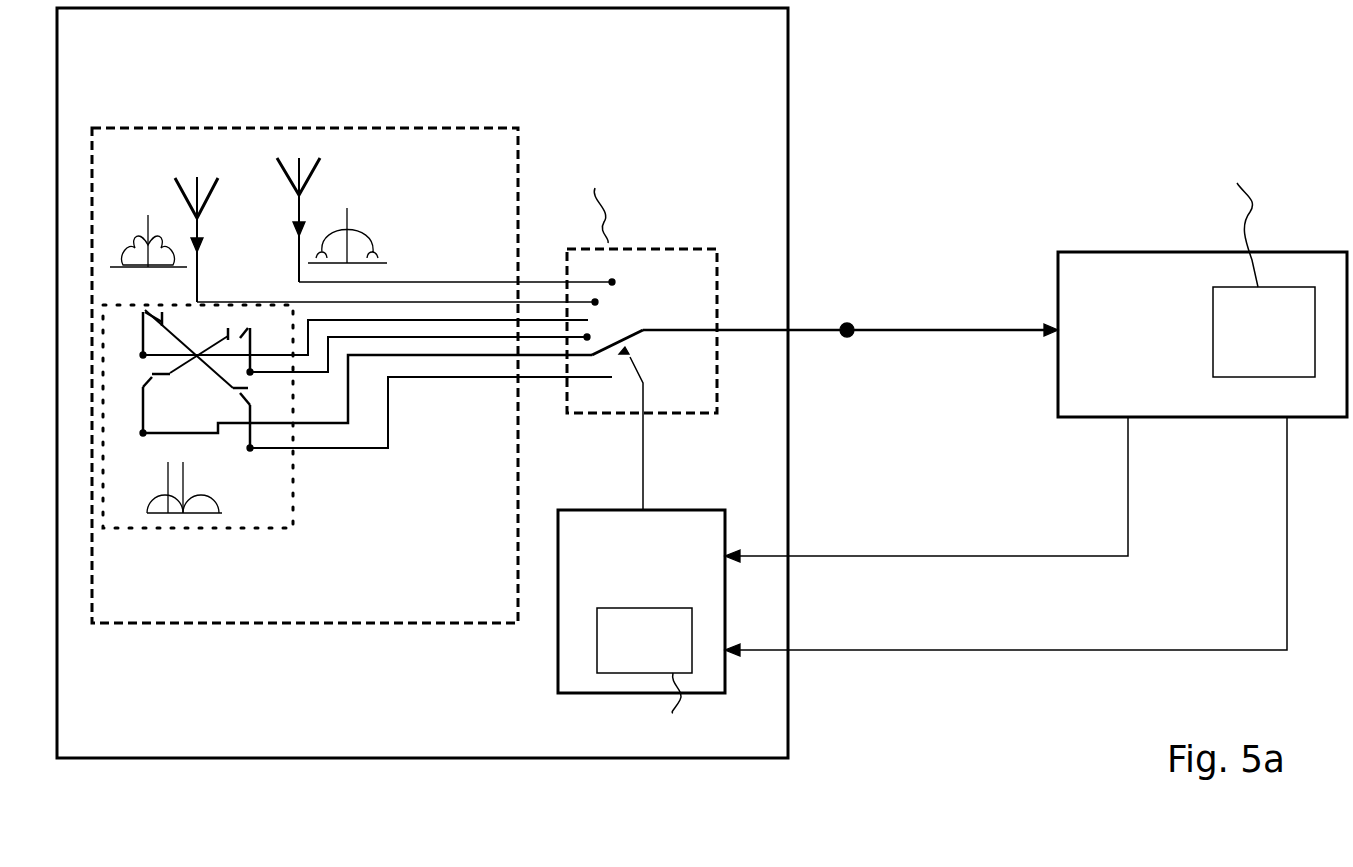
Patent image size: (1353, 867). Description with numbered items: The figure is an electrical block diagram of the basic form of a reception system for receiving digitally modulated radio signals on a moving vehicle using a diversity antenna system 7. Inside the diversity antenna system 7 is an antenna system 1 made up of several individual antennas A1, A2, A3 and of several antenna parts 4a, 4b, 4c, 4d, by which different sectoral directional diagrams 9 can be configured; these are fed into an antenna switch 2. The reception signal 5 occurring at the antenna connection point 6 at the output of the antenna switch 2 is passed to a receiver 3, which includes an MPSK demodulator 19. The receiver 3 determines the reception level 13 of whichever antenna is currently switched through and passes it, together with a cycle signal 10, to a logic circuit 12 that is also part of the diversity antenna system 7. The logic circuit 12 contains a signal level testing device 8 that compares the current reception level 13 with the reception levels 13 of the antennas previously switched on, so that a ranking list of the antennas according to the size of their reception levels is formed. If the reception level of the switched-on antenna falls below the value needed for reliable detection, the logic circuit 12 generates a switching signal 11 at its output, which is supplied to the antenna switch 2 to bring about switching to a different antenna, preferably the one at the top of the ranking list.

The antenna system 1 is at (507, 196).
The antenna switch 2 is at (692, 305).
The receiver 3 is at (1202, 354).
The antenna part 4a is at (366, 395).
The antenna part 4b is at (248, 433).
The antenna part 4c is at (409, 346).
The antenna part 4d is at (143, 313).
The reception signal 5 is at (918, 330).
The antenna connection point 6 is at (847, 320).
The diversity antenna system 7 is at (665, 100).
The signal level testing device 8 is at (579, 677).
The sectoral directional diagram 9 is at (136, 233).
The cycle signal 10 is at (922, 556).
The switching signal 11 is at (668, 448).
The logic circuit 12 is at (652, 582).
The reception level signal 13 is at (922, 650).
The MPSK demodulator 19 is at (1285, 357).
The antenna A1 is at (319, 217).
The antenna A2 is at (176, 236).
The antenna A3 is at (167, 487).